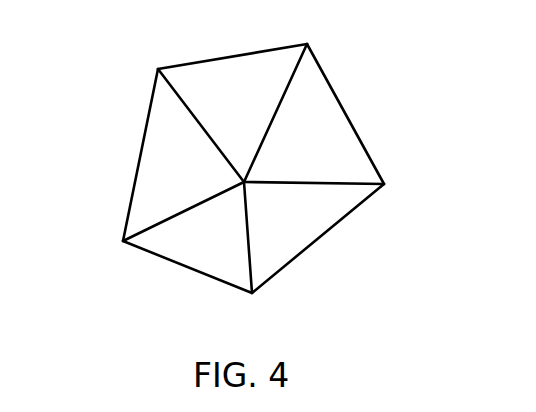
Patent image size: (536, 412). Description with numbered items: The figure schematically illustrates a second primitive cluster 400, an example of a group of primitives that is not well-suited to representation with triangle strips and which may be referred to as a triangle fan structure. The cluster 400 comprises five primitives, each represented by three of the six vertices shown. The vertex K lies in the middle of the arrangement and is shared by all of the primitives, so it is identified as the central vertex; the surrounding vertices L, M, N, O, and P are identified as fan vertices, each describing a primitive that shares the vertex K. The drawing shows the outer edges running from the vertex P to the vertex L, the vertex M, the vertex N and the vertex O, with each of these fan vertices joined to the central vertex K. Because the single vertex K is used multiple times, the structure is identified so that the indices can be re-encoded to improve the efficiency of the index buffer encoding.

The cluster 400 is at (132, 323).
The vertex K is at (253, 168).
The vertex P is at (144, 59).
The vertex L is at (314, 34).
The vertex M is at (397, 191).
The vertex N is at (256, 306).
The vertex O is at (113, 254).